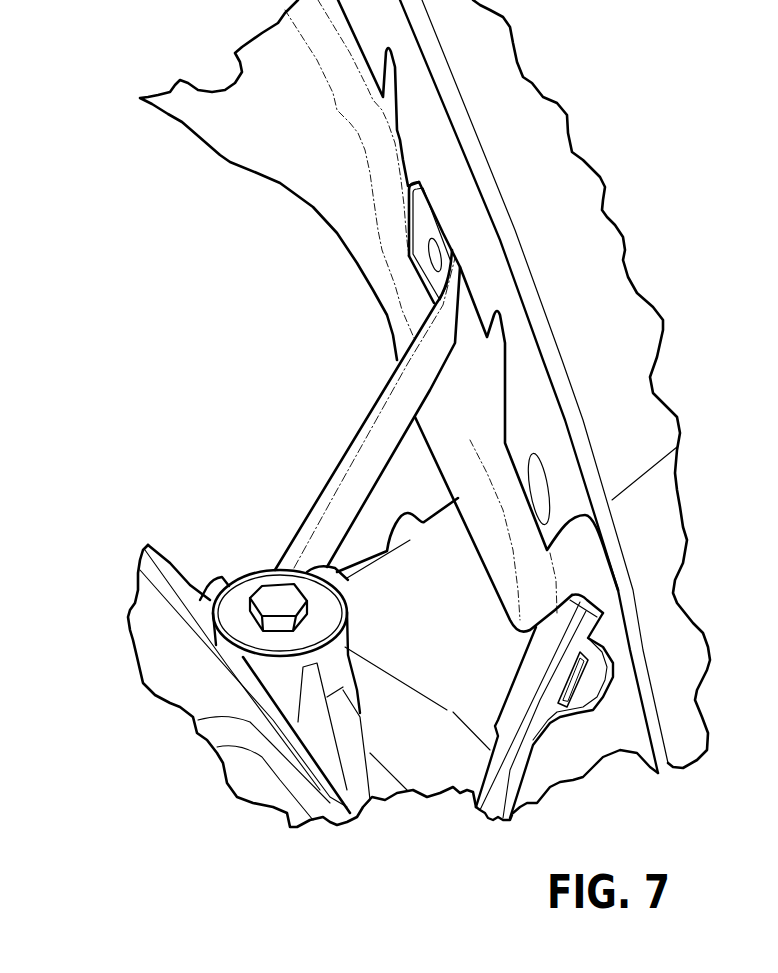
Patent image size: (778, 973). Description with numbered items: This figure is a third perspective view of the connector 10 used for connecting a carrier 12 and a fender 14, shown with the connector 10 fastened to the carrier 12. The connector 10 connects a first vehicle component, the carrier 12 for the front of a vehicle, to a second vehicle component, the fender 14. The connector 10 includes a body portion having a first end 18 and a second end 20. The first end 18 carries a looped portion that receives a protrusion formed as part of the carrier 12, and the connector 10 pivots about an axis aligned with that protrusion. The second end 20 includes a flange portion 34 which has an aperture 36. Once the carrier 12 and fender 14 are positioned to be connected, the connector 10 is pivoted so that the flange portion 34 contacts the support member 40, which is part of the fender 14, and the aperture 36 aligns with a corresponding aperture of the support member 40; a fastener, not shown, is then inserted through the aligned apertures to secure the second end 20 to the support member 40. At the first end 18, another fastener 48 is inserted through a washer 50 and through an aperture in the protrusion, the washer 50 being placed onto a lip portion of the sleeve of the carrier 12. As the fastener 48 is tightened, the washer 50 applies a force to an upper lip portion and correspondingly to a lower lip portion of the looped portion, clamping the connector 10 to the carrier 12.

The connector 10 is at (338, 446).
The carrier 12 is at (147, 608).
The fender 14 is at (588, 168).
The first end 18 is at (359, 551).
The second end 20 is at (408, 248).
The flange portion 34 is at (420, 219).
The aperture 36 is at (435, 265).
The support member 40 is at (273, 165).
The fastener 48 is at (278, 595).
The washer 50 is at (240, 587).